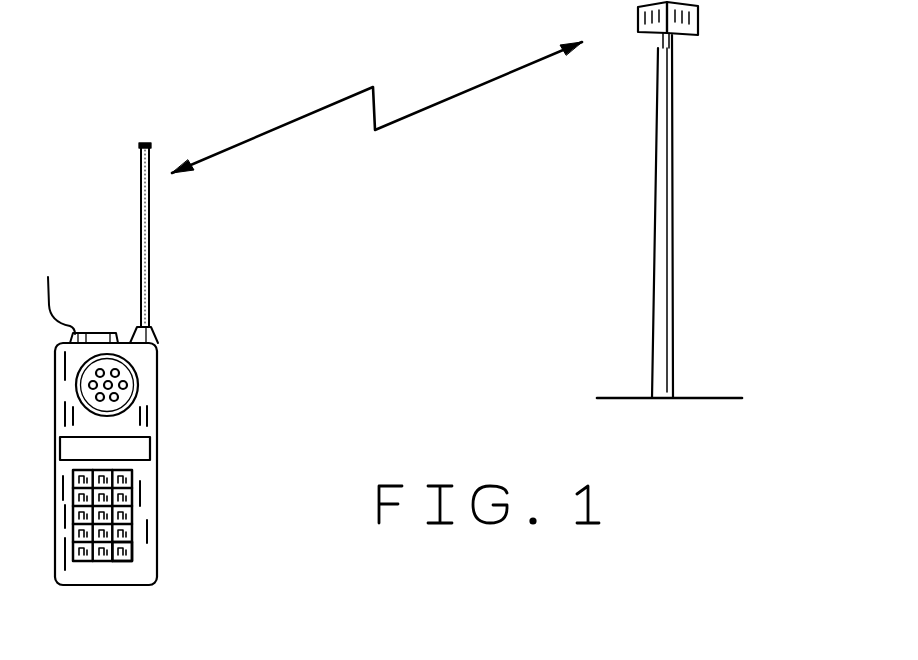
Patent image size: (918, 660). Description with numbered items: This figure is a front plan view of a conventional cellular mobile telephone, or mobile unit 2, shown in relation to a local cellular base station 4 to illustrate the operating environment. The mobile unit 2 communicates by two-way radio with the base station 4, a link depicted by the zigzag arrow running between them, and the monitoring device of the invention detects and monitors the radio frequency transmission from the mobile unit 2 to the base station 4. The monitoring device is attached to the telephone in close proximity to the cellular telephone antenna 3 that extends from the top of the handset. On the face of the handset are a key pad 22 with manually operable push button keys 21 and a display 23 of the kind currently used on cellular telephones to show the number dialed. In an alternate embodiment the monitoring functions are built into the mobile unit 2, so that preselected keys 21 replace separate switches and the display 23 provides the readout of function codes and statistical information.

The mobile unit 2 is at (157, 419).
The cellular telephone antenna 3 is at (149, 285).
The local cellular base station 4 is at (658, 183).
The push button keys 21 is at (120, 518).
The key pad 22 is at (132, 552).
The display 23 is at (150, 452).